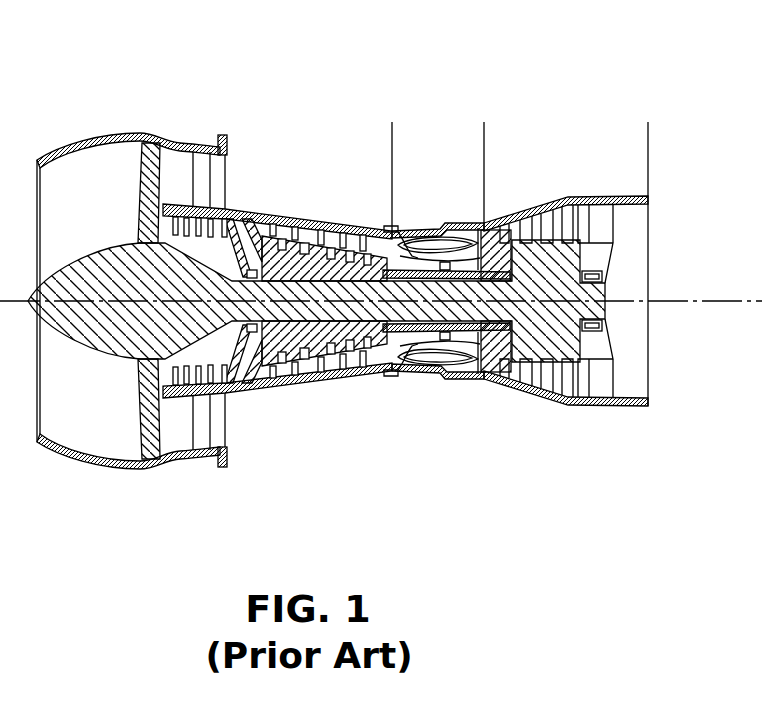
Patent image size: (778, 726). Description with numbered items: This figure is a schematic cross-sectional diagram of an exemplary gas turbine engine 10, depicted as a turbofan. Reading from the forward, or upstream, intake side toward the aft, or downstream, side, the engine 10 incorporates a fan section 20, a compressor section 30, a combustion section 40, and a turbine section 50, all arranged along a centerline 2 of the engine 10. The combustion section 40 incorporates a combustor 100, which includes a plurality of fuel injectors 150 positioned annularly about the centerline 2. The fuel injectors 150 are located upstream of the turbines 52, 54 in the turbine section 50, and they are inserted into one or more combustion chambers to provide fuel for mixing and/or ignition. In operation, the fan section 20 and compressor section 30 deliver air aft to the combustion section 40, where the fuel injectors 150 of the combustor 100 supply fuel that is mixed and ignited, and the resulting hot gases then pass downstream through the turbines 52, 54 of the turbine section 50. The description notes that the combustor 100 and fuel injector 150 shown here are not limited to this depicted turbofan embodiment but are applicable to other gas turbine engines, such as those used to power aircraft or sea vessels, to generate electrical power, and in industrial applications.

The gas turbine engine 10 is at (120, 88).
The fan section 20 is at (138, 217).
The compressor section 30 is at (392, 122).
The combustion section 40 is at (482, 122).
The turbine section 50 is at (648, 122).
The turbine 52 is at (489, 215).
The turbine 54 is at (560, 200).
The combustor 100 is at (424, 214).
The fuel injector 150 is at (397, 215).
The centerline 2 is at (620, 300).